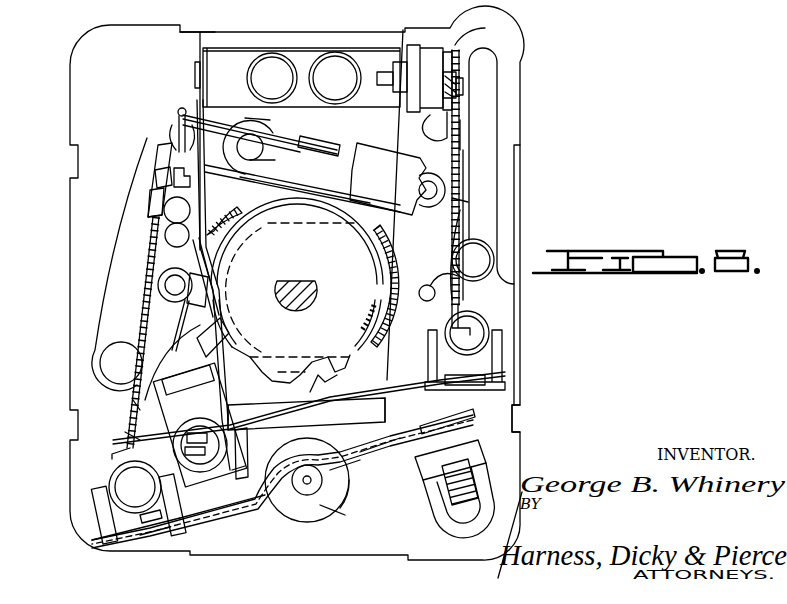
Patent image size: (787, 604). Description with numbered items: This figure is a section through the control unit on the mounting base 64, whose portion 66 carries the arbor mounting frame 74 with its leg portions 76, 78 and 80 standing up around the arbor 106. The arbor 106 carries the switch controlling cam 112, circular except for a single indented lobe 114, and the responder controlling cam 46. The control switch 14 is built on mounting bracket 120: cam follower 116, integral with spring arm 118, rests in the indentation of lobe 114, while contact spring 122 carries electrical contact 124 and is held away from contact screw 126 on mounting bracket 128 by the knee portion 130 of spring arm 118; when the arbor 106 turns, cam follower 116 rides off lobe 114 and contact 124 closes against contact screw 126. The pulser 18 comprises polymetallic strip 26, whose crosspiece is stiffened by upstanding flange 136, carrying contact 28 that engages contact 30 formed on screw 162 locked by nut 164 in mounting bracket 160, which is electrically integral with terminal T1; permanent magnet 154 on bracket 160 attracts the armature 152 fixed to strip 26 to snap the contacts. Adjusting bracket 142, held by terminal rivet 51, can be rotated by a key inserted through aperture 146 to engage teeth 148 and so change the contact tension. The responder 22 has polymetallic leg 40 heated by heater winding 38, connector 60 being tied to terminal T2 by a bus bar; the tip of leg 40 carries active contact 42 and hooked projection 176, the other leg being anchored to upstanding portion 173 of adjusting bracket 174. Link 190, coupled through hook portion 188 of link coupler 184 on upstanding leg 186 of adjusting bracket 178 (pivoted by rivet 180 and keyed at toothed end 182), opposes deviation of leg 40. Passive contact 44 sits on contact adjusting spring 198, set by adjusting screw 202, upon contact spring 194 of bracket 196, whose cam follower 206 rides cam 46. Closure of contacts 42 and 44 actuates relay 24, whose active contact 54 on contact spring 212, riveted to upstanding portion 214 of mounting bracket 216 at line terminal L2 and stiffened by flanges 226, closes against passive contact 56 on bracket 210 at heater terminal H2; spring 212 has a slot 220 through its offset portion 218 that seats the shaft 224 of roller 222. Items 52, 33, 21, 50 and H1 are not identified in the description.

The mounting base 64 is at (72, 92).
The contact 28 is at (470, 30).
The adjusting bracket 142 is at (482, 165).
The bracket 210 is at (520, 460).
The portion of base 66 is at (260, 32).
The terminal T1 is at (337, 58).
The screw 162 is at (378, 78).
The nut 164 is at (400, 93).
The mounting bracket 160 is at (372, 57).
The permanent magnet 154 is at (431, 45).
The armature 152 is at (460, 70).
The contact 30 is at (450, 100).
The aperture 146 is at (462, 90).
The teeth 148 is at (462, 115).
The pulser 18 is at (470, 137).
The bracket 196 is at (215, 47).
The link 190 is at (207, 100).
The hook portion 188 is at (178, 110).
The upstanding leg 186 is at (318, 142).
The adjusting bracket 178 is at (358, 140).
The rivet 180 is at (300, 153).
The link coupler 184 is at (255, 124).
The adjusting screw 202 is at (270, 131).
The passive responder contact 44 is at (262, 160).
The responder controlling cam 46 is at (325, 166).
The switch controlling cam 112 is at (350, 182).
The toothed end 182 is at (405, 190).
The contact spring 194 is at (210, 197).
The upstanding portion 173 is at (160, 145).
The hooked projection 176 is at (155, 162).
The adjusting bracket 174 is at (135, 165).
The active contact 42 is at (162, 183).
The contact adjusting spring 198 is at (168, 210).
The polymetallic leg 40 is at (150, 250).
The responder 22 is at (140, 263).
The heater winding 38 is at (168, 287).
The roller 52 is at (132, 343).
The cam follower 206 is at (222, 283).
The leg portion 78 is at (220, 340).
The arbor 106 is at (300, 283).
The arbor mounting frame 74 is at (400, 250).
The leg portion 76 is at (240, 222).
The lobe 114 is at (322, 362).
The leg portion 80 is at (428, 286).
The connector 60 is at (425, 305).
The bracket 33 is at (468, 198).
The polymetallic strip 26 is at (463, 213).
The terminal rivet 51 is at (478, 258).
The upstanding flange 136 is at (470, 318).
The roller 21 is at (470, 335).
The mounting bracket 120 is at (495, 370).
The spring arm 118 is at (405, 378).
The contact spring 122 is at (320, 412).
The control switch 14 is at (275, 418).
The knee portion 130 is at (385, 402).
The cam follower 116 is at (320, 378).
The wire 50 is at (390, 433).
The offset portion 218 is at (305, 445).
The longitudinal slot 220 is at (310, 490).
The shaft 224 is at (333, 503).
The roller 222 is at (350, 512).
The stiffening flanges 226 is at (378, 448).
The relay 24 is at (357, 477).
The active contact 54 is at (493, 423).
The passive contact 56 is at (490, 447).
The heater terminal H2 is at (468, 520).
The electrical contact 124 is at (208, 470).
The heater H1 is at (240, 486).
The line terminal L2 is at (110, 487).
The mounting bracket 216 is at (113, 517).
The upstanding portion 214 is at (137, 537).
The contact spring 212 is at (205, 513).
The contact screw 126 is at (133, 440).
The mounting bracket 128 is at (120, 457).
The terminal T2 is at (137, 405).